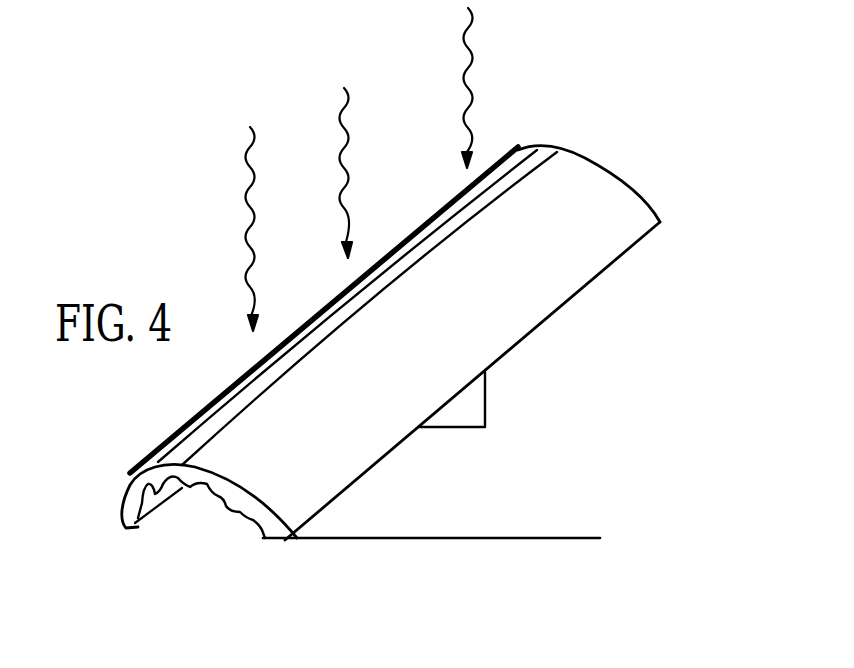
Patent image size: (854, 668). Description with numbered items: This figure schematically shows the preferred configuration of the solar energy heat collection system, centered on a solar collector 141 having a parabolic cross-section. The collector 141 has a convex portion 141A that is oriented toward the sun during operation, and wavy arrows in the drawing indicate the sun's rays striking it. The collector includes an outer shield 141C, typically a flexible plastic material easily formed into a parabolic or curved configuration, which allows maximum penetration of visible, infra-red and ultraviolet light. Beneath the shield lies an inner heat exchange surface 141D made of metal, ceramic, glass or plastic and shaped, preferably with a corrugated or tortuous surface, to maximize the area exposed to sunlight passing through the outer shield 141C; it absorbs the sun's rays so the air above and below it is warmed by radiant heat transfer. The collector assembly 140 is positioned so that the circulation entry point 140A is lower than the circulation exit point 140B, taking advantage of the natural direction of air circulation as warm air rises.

The curved panel body 140 is at (461, 242).
The circulation entry point 140A is at (196, 524).
The circulation exit point 140B is at (633, 170).
The solar collector 141 is at (233, 480).
The convex portion 141A is at (176, 427).
The outer shield 141C is at (355, 383).
The inner heat exchange surface 141D is at (235, 516).